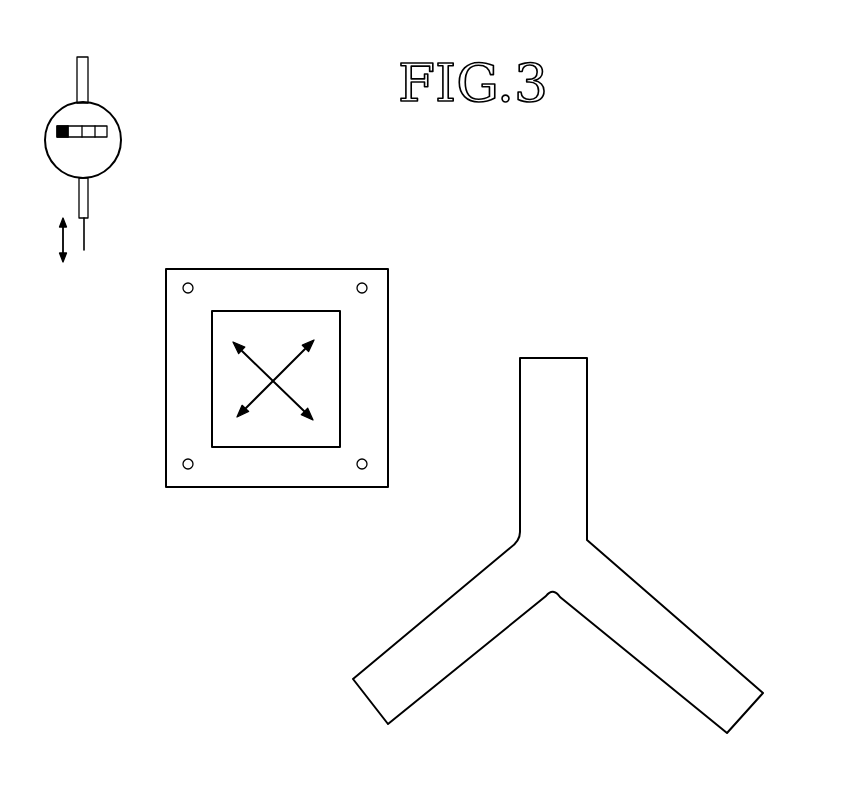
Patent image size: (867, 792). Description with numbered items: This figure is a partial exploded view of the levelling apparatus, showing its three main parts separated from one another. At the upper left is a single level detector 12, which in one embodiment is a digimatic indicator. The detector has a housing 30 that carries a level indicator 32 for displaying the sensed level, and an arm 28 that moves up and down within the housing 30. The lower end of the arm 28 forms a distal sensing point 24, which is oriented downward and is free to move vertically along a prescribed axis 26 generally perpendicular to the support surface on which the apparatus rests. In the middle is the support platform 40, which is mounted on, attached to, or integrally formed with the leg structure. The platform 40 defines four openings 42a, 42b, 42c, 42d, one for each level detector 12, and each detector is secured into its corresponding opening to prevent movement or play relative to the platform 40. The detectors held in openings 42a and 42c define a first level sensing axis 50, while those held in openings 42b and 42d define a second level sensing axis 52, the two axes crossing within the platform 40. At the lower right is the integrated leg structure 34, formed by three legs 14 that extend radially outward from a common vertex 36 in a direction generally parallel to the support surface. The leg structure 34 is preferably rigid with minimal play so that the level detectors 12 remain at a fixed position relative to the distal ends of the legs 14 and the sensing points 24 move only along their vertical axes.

The level detector 12 is at (112, 172).
The leg 14 is at (587, 447).
The distal sensing point 24 is at (92, 264).
The prescribed axis 26 is at (61, 243).
The arm 28 is at (85, 242).
The housing 30 is at (121, 141).
The level indicator 32 is at (60, 128).
The integrated leg structure 34 is at (561, 534).
The common vertex 36 is at (567, 566).
The support platform 40 is at (277, 320).
The opening 42a is at (191, 284).
The opening 42b is at (366, 284).
The opening 42c is at (367, 464).
The opening 42d is at (183, 464).
The first level sensing axis 50 is at (256, 362).
The second level sensing axis 52 is at (283, 368).